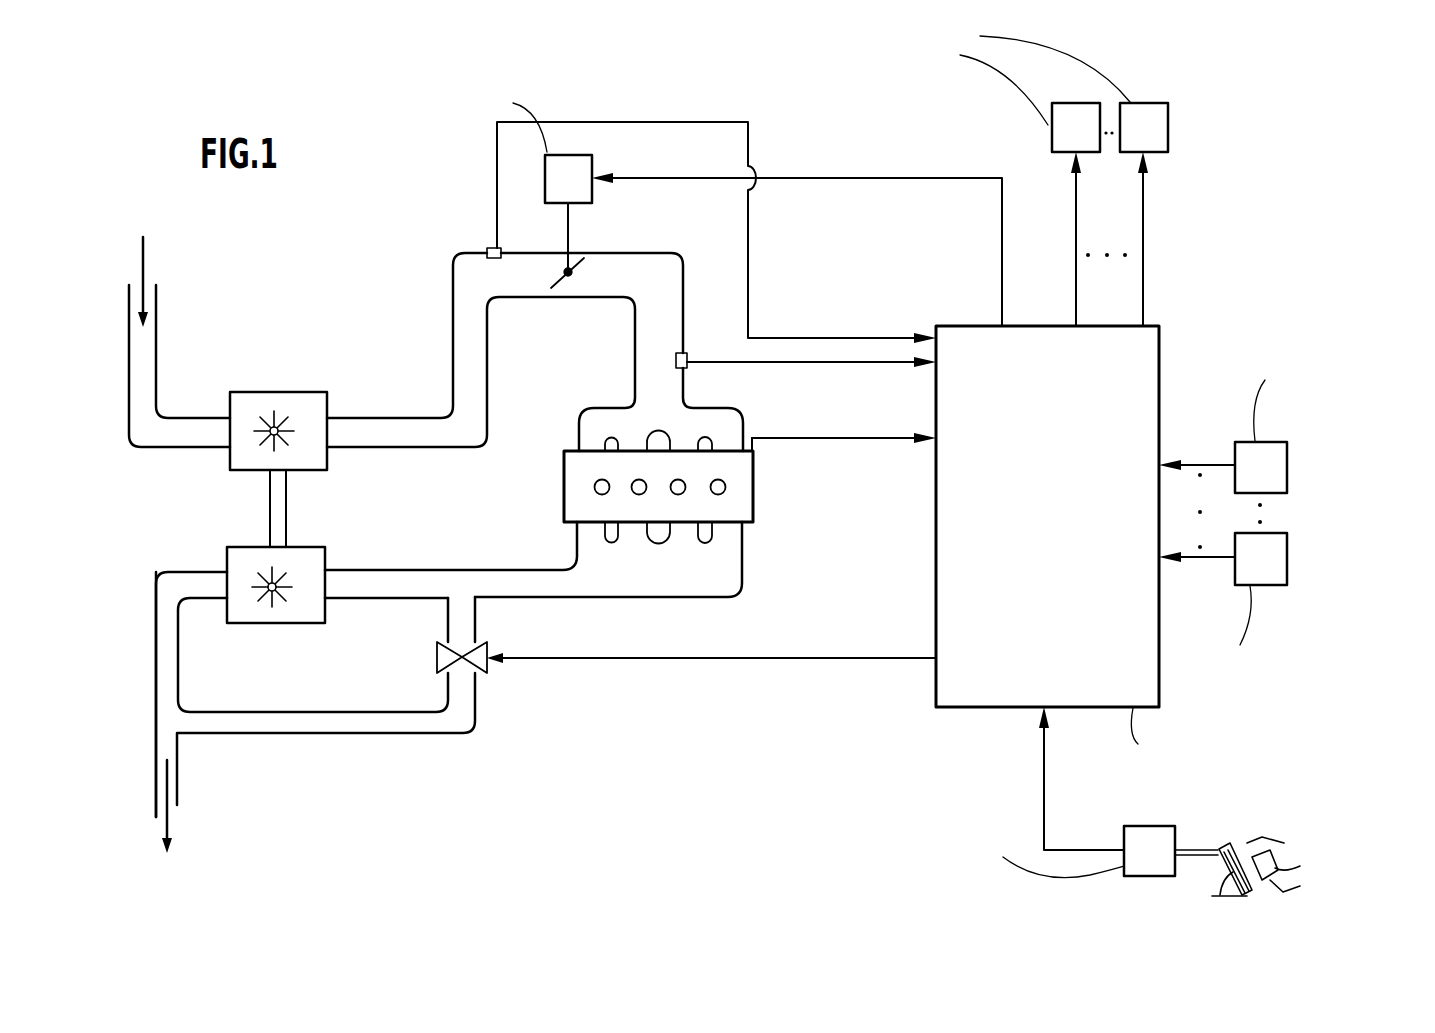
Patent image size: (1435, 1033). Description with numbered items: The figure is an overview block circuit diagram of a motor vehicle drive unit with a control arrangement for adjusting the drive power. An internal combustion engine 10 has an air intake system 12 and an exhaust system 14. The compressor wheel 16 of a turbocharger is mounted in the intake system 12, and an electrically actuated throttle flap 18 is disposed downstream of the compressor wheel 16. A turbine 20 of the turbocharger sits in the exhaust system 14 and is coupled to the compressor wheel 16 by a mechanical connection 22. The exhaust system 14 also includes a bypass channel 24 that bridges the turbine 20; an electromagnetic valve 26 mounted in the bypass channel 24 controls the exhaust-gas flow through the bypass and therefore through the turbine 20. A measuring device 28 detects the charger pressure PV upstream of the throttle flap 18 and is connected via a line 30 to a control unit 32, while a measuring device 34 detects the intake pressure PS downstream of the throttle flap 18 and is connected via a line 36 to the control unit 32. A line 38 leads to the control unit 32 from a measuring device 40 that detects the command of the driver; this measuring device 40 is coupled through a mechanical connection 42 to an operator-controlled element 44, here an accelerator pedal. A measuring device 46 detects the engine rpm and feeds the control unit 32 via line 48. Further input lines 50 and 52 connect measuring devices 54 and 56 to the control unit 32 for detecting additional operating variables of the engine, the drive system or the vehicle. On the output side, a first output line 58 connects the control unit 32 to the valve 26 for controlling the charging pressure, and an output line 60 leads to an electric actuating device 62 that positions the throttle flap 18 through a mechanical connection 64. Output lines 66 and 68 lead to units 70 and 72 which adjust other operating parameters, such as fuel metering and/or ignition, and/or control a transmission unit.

The internal combustion engine 10 is at (756, 523).
The air intake system 12 is at (434, 378).
The exhaust system 14 is at (453, 555).
The compressor wheel 16 is at (322, 392).
The throttle flap 18 is at (563, 300).
The turbine 20 is at (327, 553).
The mechanical connection 22 is at (288, 509).
The bypass channel 24 is at (410, 734).
The electromagnetic valve 26 is at (438, 660).
The measuring device 28 is at (490, 248).
The line 30 is at (690, 122).
The control unit 32 is at (1160, 328).
The measuring device 34 is at (688, 355).
The line 36 is at (815, 365).
The line 38 is at (1044, 800).
The measuring device 40 is at (1130, 826).
The mechanical connection 42 is at (1211, 849).
The operator-controlled element 44 is at (1257, 840).
The measuring device 46 is at (756, 455).
The line 48 is at (852, 440).
The input line 50 is at (1205, 465).
The input line 52 is at (1205, 558).
The measuring device 54 is at (1287, 446).
The measuring device 56 is at (1287, 582).
The first output line 58 is at (730, 660).
The output line 60 is at (878, 178).
The electric actuating device 62 is at (592, 156).
The mechanical connection 64 is at (570, 229).
The output line 66 is at (1076, 224).
The output line 68 is at (1143, 232).
The unit 70 is at (1062, 103).
The unit 72 is at (1160, 103).